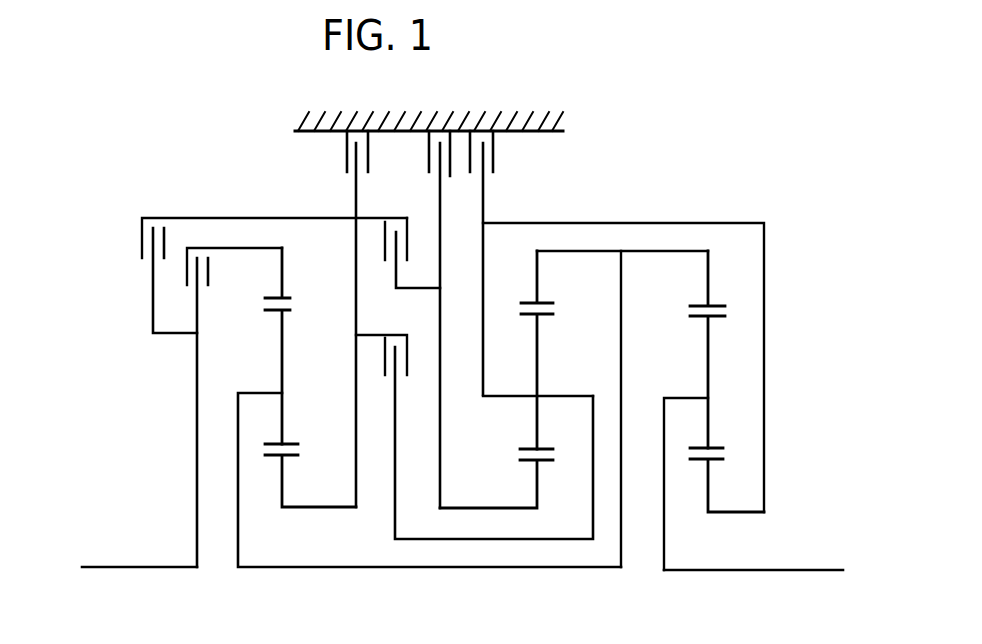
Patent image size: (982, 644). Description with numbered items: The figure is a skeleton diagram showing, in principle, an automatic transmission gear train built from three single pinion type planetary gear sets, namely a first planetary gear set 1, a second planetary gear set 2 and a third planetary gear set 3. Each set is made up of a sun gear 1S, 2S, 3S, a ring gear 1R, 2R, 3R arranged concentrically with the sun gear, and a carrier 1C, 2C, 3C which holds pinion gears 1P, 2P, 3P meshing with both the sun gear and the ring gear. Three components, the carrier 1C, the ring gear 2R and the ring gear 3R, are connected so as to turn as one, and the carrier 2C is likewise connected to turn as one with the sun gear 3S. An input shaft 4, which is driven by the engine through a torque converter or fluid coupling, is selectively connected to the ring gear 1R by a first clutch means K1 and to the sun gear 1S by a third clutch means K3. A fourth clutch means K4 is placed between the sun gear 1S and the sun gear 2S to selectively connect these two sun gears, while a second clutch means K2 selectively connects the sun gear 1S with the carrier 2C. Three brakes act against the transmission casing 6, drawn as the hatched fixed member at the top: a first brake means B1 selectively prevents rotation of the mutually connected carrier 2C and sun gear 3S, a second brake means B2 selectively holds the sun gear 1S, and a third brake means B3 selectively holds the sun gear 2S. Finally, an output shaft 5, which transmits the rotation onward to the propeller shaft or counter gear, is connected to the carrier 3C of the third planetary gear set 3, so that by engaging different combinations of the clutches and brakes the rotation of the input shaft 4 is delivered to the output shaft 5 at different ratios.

The first planetary gear set 1 is at (426, 439).
The second planetary gear set 2 is at (602, 427).
The third planetary gear set 3 is at (705, 442).
The input shaft 4 is at (106, 567).
The output shaft 5 is at (772, 552).
The transmission casing 6 is at (458, 123).
The first clutch means K1 is at (234, 395).
The second clutch means K2 is at (474, 421).
The third clutch means K3 is at (274, 259).
The fourth clutch means K4 is at (412, 239).
The first brake means B1 is at (501, 263).
The second brake means B2 is at (337, 319).
The third brake means B3 is at (421, 319).
The ring gear of the first planetary gear set 1R is at (290, 298).
The pinion gears of the first planetary gear set 1P is at (290, 312).
The carrier of the first planetary gear set 1C is at (263, 393).
The sun gear of the first planetary gear set 1S is at (292, 457).
The ring gear of the second planetary gear set 2R is at (546, 303).
The pinion gears of the second planetary gear set 2P is at (546, 316).
The carrier of the second planetary gear set 2C is at (558, 396).
The sun gear of the second planetary gear set 2S is at (534, 461).
The ring gear of the third planetary gear set 3R is at (712, 303).
The pinion gears of the third planetary gear set 3P is at (714, 318).
The carrier of the third planetary gear set 3C is at (690, 397).
The sun gear of the third planetary gear set 3S is at (713, 461).